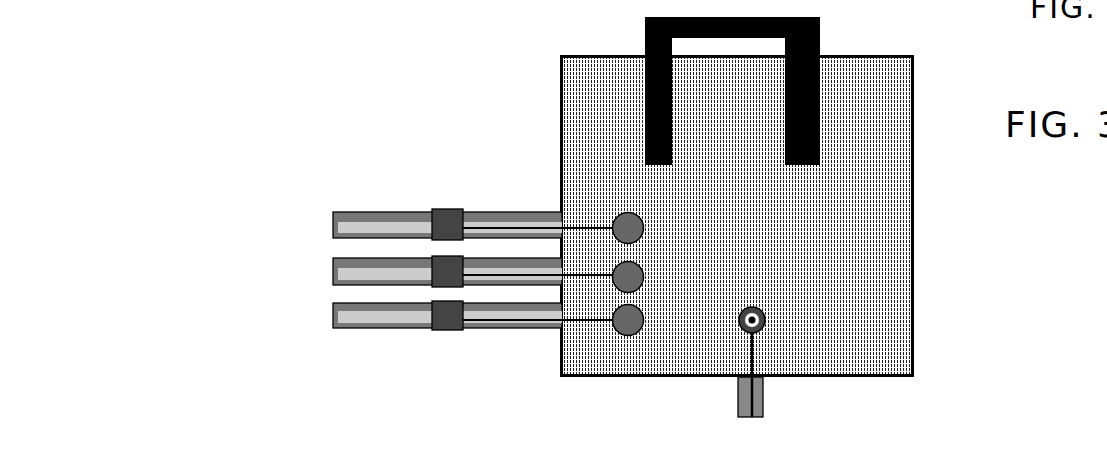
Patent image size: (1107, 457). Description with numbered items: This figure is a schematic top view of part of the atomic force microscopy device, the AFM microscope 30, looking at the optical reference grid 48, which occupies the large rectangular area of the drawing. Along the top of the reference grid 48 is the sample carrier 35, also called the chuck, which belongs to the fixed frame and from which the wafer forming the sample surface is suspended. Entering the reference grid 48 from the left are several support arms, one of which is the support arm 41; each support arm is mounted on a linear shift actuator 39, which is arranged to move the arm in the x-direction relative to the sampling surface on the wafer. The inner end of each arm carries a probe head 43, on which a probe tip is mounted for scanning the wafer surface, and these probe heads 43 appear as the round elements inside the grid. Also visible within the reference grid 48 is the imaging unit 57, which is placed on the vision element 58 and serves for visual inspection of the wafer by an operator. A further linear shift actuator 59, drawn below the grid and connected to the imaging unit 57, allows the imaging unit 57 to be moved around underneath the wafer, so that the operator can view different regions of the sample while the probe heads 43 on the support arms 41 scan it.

The AFM microscope 30 is at (245, 25).
The sample carrier 35 is at (645, 40).
The linear shift actuator 39 is at (333, 228).
The support arm 41 is at (516, 229).
The probe head 43 is at (628, 212).
The optical reference grid 48 is at (892, 230).
The imaging unit 57 is at (742, 315).
The vision element 58 is at (765, 326).
The linear shift actuator 59 is at (738, 396).